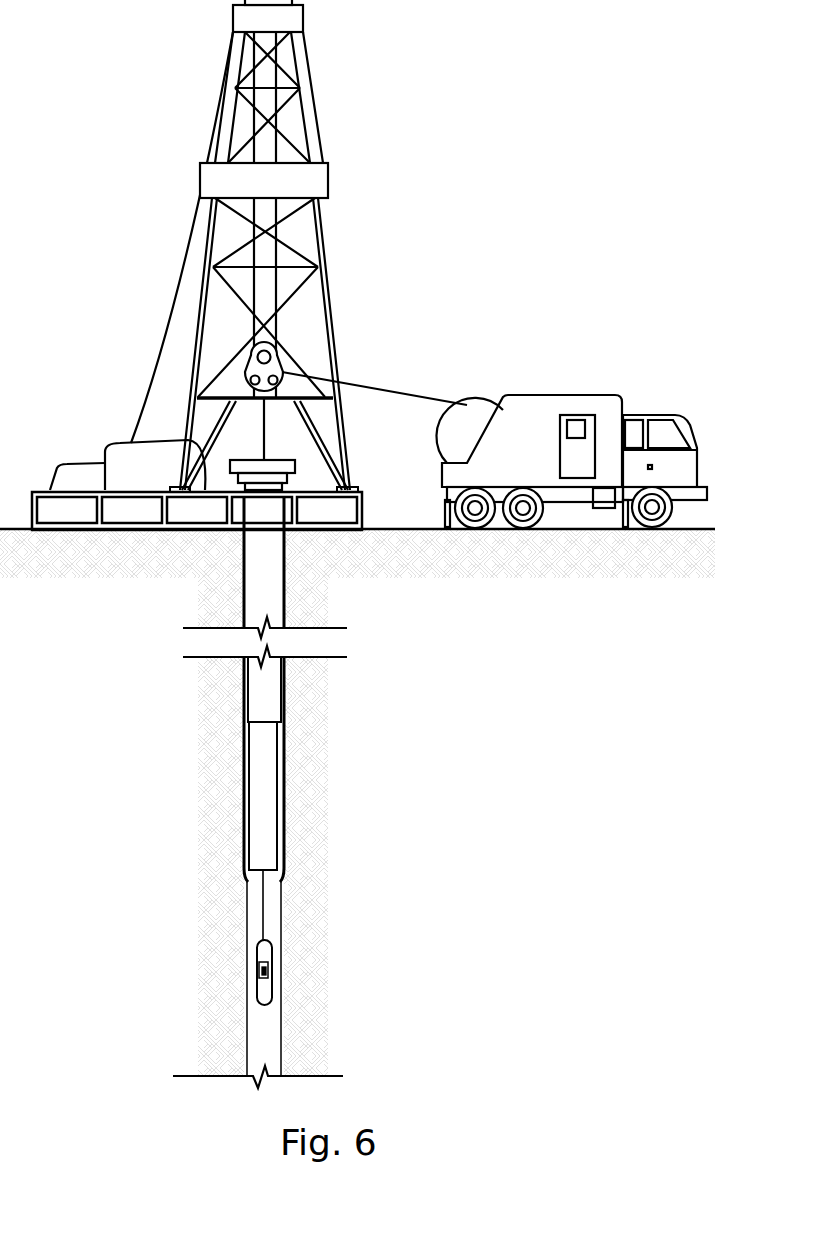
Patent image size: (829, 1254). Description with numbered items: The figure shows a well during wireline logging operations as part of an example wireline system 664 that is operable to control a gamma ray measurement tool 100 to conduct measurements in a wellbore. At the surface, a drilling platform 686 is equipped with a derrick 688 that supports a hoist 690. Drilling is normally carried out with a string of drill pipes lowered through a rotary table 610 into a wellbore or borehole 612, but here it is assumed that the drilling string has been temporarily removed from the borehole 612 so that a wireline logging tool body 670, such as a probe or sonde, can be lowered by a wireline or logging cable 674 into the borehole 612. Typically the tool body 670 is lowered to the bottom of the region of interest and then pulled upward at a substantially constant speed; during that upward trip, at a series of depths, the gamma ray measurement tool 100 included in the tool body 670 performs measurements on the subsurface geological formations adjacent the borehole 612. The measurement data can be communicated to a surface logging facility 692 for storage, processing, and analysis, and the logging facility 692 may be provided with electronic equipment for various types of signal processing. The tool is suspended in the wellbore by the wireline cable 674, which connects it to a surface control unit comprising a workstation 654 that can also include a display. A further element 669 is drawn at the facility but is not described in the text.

The wireline system 664 is at (520, 184).
The hoist 690 is at (271, 356).
The wireline or logging cable 674 is at (382, 388).
The rotary table 610 is at (295, 460).
The derrick 688 is at (349, 487).
The drilling platform 686 is at (362, 522).
The surface logging facility 692 is at (527, 395).
The workstation 654 is at (558, 458).
The computer 669 is at (573, 420).
The wellbore or borehole 612 is at (244, 895).
The wireline logging tool body 670 is at (268, 947).
The gamma ray measurement tool 100 is at (268, 970).